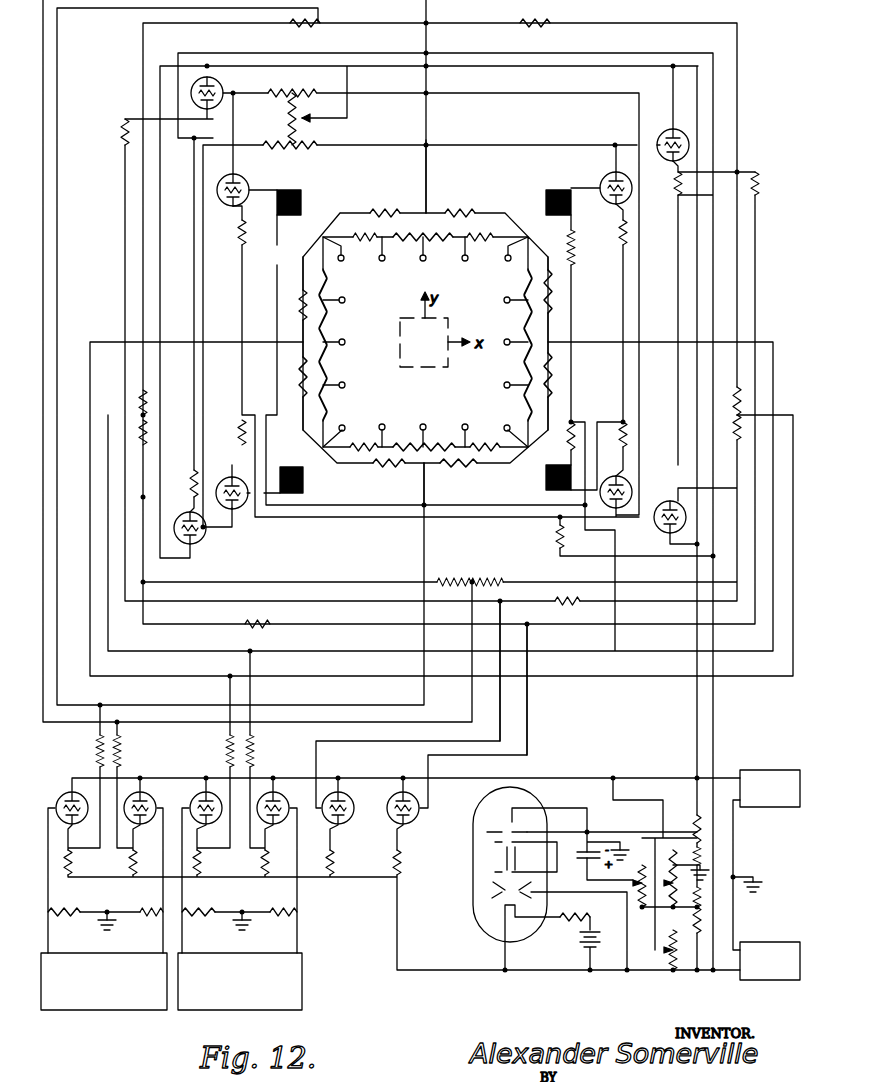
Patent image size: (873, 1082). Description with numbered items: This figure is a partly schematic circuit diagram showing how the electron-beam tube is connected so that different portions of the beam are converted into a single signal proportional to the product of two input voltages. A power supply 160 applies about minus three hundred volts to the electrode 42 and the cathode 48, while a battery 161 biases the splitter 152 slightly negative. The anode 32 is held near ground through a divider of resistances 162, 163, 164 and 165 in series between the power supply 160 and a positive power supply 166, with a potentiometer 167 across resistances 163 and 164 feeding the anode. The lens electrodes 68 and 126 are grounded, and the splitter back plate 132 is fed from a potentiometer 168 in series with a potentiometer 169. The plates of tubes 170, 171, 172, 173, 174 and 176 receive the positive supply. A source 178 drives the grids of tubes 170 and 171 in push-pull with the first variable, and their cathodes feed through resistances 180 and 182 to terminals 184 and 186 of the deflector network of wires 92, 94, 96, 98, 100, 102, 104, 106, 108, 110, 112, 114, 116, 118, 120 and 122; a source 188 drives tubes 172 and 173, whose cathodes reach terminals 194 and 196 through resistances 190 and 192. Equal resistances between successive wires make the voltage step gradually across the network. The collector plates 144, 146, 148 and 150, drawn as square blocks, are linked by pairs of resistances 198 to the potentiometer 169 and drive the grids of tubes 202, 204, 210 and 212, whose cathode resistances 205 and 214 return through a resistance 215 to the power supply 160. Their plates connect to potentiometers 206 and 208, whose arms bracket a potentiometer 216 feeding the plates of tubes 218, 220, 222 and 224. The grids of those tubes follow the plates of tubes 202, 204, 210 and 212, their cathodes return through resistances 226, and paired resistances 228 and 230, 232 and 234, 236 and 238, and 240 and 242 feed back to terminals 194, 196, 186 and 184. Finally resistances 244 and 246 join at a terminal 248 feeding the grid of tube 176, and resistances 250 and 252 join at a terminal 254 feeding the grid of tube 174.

The anode 32 is at (490, 887).
The electrode 42 is at (490, 896).
The cathode 48 is at (503, 910).
The lens electrode 68 is at (516, 868).
The deflector wire 92 is at (356, 410).
The deflector wire 94 is at (355, 371).
The deflector wire 96 is at (345, 341).
The deflector wire 98 is at (345, 299).
The deflector wire 100 is at (343, 262).
The deflector wire 102 is at (383, 262).
The deflector wire 104 is at (424, 262).
The deflector wire 106 is at (466, 262).
The deflector wire 108 is at (505, 262).
The deflector wire 110 is at (504, 302).
The deflector wire 112 is at (505, 339).
The deflector wire 114 is at (505, 382).
The deflector wire 116 is at (505, 424).
The deflector wire 118 is at (463, 423).
The deflector wire 120 is at (424, 423).
The deflector wire 122 is at (382, 423).
The lens electrode 126 is at (488, 847).
The splitter back plate 132 is at (538, 824).
The collector plate 144 is at (548, 190).
The collector plate 146 is at (301, 196).
The collector plate 148 is at (303, 485).
The collector plate 150 is at (546, 487).
The splitter 152 is at (530, 810).
The power supply 160 is at (758, 980).
The battery 161 is at (594, 862).
The resistance 162 is at (697, 920).
The resistance 163 is at (697, 896).
The resistance 164 is at (697, 852).
The resistance 165 is at (697, 828).
The power supply 166 is at (752, 807).
The potentiometer 167 is at (642, 897).
The potentiometer 168 is at (673, 955).
The potentiometer 169 is at (674, 875).
The tube 170 is at (62, 794).
The tube 171 is at (153, 798).
The tube 172 is at (201, 792).
The tube 173 is at (299, 783).
The tube 174 is at (352, 816).
The tube 176 is at (392, 796).
The source 178 is at (70, 1010).
The resistance 180 is at (100, 750).
The resistance 182 is at (117, 750).
The terminal 184 is at (426, 472).
The terminal 186 is at (436, 199).
The source 188 is at (225, 1010).
The resistance 190 is at (230, 750).
The resistance 192 is at (250, 750).
The terminal 194 is at (300, 342).
The terminal 196 is at (550, 342).
The resistances 198 is at (571, 258).
The tube 202 is at (603, 178).
The tube 204 is at (628, 485).
The resistances 205 is at (611, 412).
The potentiometer 206 is at (300, 150).
The potentiometer 208 is at (292, 90).
The tube 210 is at (247, 182).
The tube 212 is at (242, 505).
The resistances 214 is at (228, 448).
The resistance 215 is at (560, 530).
The potentiometer 216 is at (300, 125).
The tube 218 is at (659, 140).
The tube 220 is at (662, 530).
The tube 222 is at (220, 84).
The tube 224 is at (200, 540).
The resistances 226 is at (660, 199).
The resistance 228 is at (737, 397).
The resistance 230 is at (737, 432).
The resistance 232 is at (143, 402).
The resistance 234 is at (143, 432).
The resistance 236 is at (490, 580).
The resistance 238 is at (470, 582).
The resistance 240 is at (545, 23).
The resistance 242 is at (320, 23).
The resistance 244 is at (755, 172).
The resistance 246 is at (270, 624).
The terminal 248 is at (527, 628).
The resistance 250 is at (558, 604).
The resistance 252 is at (125, 119).
The terminal 254 is at (500, 606).